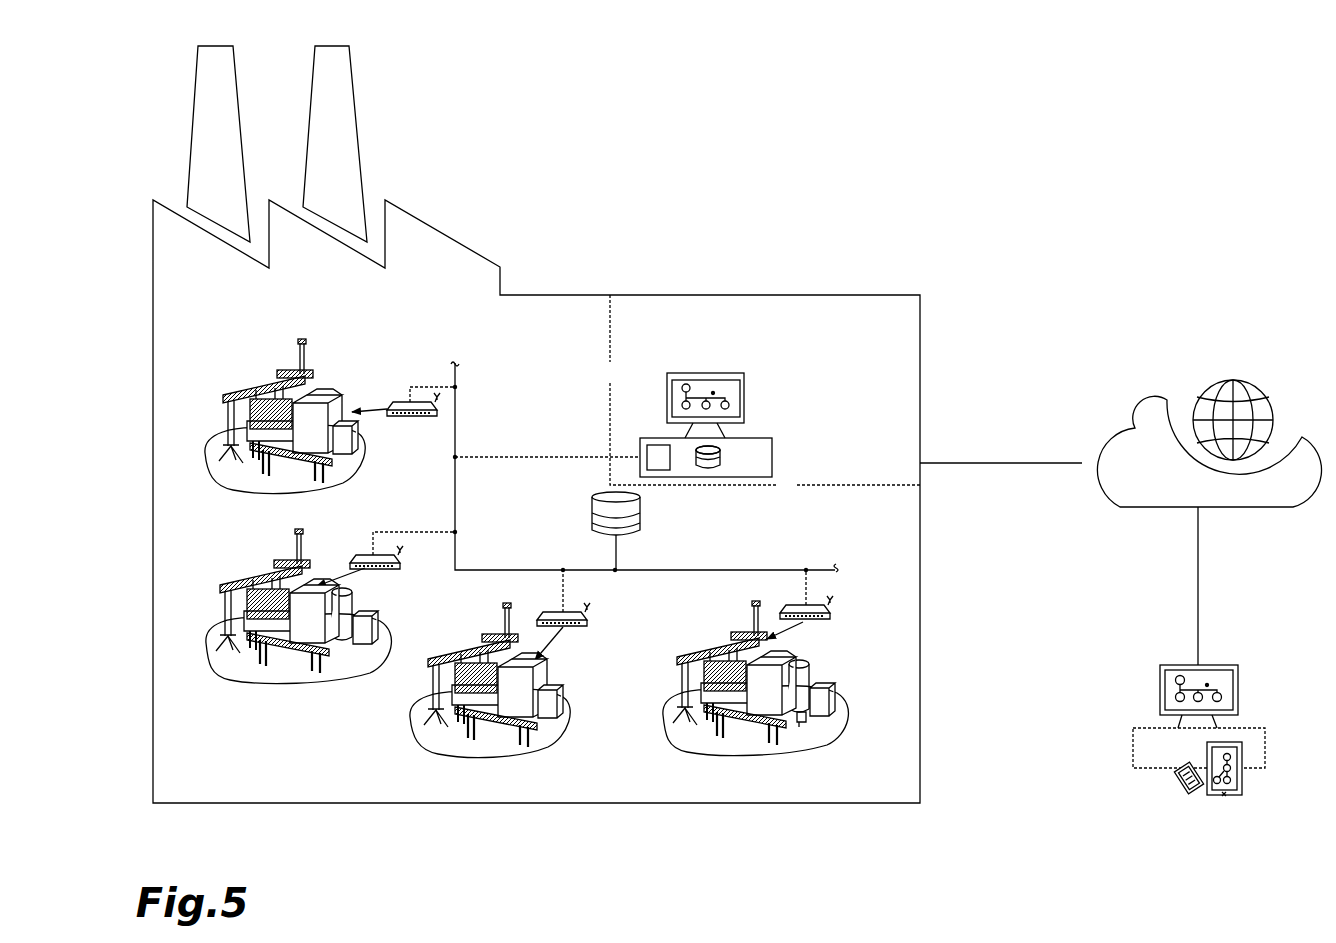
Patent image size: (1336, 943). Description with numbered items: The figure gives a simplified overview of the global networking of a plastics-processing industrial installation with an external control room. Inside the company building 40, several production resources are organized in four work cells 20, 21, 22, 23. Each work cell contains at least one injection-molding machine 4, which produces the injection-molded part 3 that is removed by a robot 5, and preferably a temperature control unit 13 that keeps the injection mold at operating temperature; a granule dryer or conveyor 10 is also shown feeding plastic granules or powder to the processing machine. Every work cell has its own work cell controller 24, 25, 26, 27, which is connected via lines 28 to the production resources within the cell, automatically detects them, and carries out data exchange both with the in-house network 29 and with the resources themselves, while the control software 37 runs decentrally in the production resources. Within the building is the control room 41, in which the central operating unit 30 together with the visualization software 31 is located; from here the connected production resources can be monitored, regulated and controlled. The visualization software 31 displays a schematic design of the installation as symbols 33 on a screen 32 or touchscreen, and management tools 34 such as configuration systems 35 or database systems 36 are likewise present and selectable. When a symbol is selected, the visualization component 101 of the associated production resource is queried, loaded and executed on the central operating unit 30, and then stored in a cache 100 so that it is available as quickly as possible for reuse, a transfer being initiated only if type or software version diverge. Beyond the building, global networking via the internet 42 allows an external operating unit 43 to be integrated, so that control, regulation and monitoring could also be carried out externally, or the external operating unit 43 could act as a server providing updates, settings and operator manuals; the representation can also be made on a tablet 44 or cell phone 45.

The injection-molded part 3 is at (295, 445).
The injection-molding machine 4 is at (315, 410).
The robot 5 is at (237, 400).
The granule dryer 10 is at (803, 720).
The temperature control unit 13 is at (348, 443).
The work cell 20 is at (240, 377).
The work cell 21 is at (240, 558).
The work cell 22 is at (468, 635).
The work cell 23 is at (698, 635).
The work cell controller 24 is at (405, 405).
The work cell controller 25 is at (368, 553).
The work cell controller 26 is at (557, 613).
The work cell controller 27 is at (805, 610).
The lines 28 is at (366, 411).
The in-house network 29 is at (547, 453).
The central operating unit 30 is at (748, 453).
The visualization software 31 is at (660, 453).
The screen 32 is at (730, 390).
The symbols 33 is at (707, 383).
The management tools 34 is at (577, 503).
The configuration systems 35 is at (622, 517).
The database systems 36 is at (618, 528).
The control software 37 is at (283, 410).
The company building 40 is at (535, 317).
The control room 41 is at (888, 352).
The internet 42 is at (1162, 430).
The external operating unit 43 is at (1253, 737).
The tablet 44 is at (1233, 775).
The cell phone 45 is at (1178, 775).
The cache 100 is at (709, 464).
The visualization component 101 is at (721, 458).